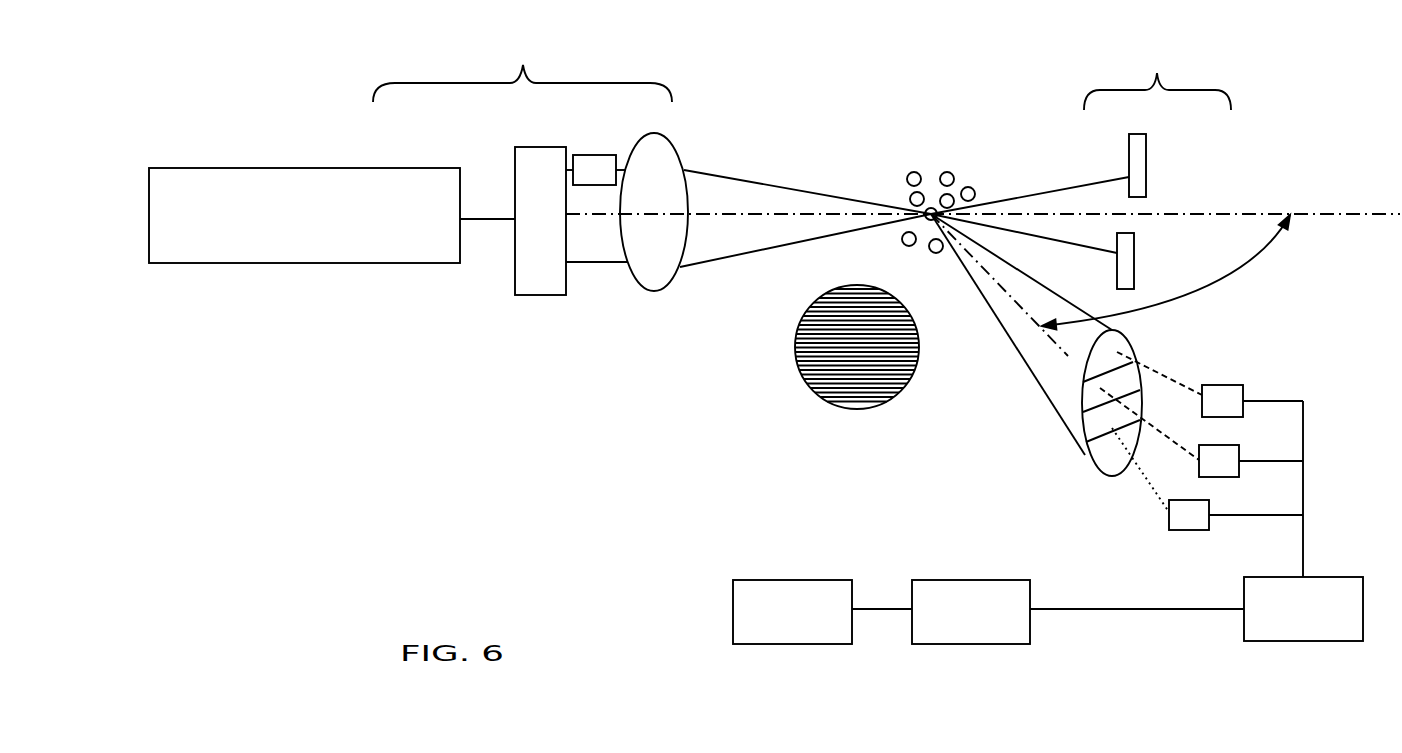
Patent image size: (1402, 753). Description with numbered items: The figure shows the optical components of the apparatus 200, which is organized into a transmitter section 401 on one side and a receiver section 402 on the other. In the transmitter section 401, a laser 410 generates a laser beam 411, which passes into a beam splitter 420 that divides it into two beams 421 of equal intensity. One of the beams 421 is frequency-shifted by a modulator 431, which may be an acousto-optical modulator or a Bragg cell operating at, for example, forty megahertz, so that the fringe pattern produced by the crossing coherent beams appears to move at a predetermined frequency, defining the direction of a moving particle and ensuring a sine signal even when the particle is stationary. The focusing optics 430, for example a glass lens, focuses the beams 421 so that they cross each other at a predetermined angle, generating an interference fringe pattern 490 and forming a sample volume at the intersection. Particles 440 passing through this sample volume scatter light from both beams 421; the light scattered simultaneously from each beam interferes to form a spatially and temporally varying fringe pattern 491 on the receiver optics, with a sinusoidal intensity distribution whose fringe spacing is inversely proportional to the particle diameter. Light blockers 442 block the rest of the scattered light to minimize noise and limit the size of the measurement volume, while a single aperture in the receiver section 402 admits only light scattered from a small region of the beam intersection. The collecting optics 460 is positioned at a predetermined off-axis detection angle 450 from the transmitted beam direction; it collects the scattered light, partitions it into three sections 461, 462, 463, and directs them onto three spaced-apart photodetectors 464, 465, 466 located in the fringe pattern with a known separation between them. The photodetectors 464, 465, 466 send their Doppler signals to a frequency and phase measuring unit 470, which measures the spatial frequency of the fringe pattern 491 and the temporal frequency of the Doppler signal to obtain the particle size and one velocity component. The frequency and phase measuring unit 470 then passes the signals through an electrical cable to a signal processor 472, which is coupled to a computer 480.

The apparatus 200 is at (300, 452).
The transmitter section 401 is at (522, 69).
The receiver section 402 is at (1157, 76).
The laser 410 is at (304, 215).
The laser beam 411 is at (492, 227).
The beam splitter 420 is at (571, 221).
The beams 421 is at (777, 245).
The focusing optics 430 is at (654, 212).
The modulator 431 is at (599, 170).
The particles 440 is at (915, 172).
The light blockers 442 is at (1149, 158).
The off-axis detection angle 450 is at (1174, 272).
The collecting optics 460 is at (1135, 350).
The first section 461 is at (1082, 380).
The second section 462 is at (1083, 412).
The third section 463 is at (1103, 455).
The photodetector 464 is at (1237, 380).
The photodetector 465 is at (1235, 442).
The photodetector 466 is at (1185, 532).
The frequency and phase measuring unit 470 is at (1196, 521).
The signal processor 472 is at (941, 612).
The computer 480 is at (792, 612).
The interference fringe pattern 490 is at (795, 343).
The fringe pattern 491 is at (1000, 327).